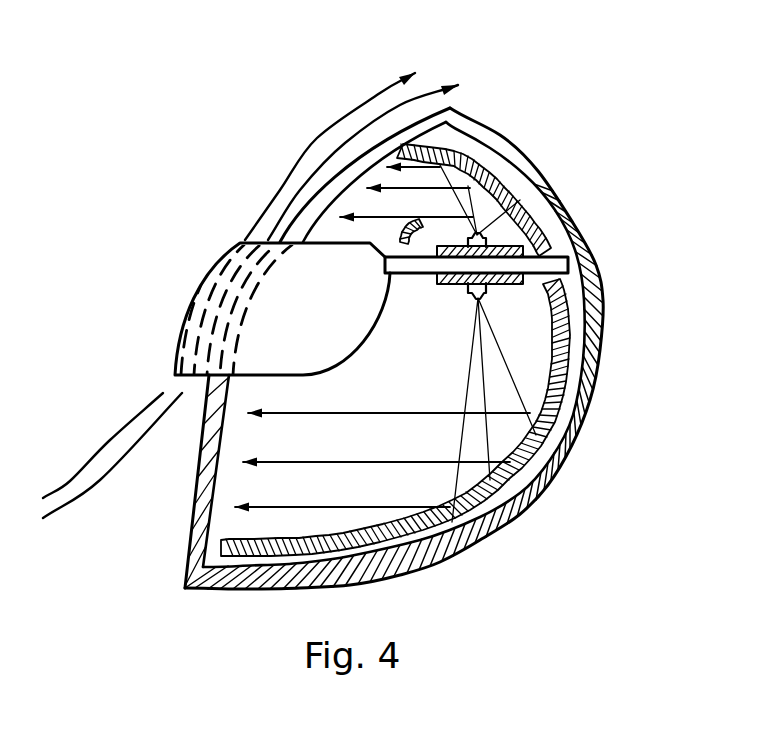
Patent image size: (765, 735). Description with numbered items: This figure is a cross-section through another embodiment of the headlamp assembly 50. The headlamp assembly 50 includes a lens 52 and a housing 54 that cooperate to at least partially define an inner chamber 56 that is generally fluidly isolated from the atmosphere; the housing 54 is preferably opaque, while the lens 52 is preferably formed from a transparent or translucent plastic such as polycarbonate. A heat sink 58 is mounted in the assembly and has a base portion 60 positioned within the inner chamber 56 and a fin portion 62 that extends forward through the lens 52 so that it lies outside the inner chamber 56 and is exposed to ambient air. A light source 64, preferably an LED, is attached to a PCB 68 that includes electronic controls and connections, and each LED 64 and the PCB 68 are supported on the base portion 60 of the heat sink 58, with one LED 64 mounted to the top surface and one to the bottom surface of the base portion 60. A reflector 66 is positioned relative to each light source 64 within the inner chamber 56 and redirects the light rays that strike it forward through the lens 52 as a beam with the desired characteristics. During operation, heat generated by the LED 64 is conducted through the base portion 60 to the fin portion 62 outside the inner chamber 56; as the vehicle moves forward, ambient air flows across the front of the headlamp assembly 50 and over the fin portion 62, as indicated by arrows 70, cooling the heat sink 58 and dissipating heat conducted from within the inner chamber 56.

The headlamp assembly 50 is at (349, 319).
The lens 52 is at (187, 530).
The housing 54 is at (495, 143).
The inner chamber 56 is at (430, 357).
The heat sink 58 is at (180, 289).
The base portion 60 is at (543, 260).
The fin portion 62 is at (193, 318).
The light source 64 is at (485, 233).
The reflector 66 is at (530, 510).
The PCB 68 is at (523, 247).
The arrows 70 is at (315, 138).